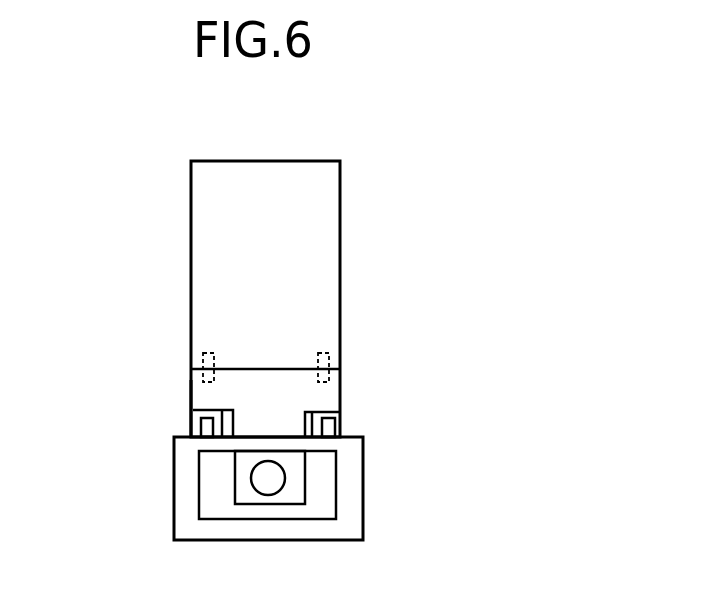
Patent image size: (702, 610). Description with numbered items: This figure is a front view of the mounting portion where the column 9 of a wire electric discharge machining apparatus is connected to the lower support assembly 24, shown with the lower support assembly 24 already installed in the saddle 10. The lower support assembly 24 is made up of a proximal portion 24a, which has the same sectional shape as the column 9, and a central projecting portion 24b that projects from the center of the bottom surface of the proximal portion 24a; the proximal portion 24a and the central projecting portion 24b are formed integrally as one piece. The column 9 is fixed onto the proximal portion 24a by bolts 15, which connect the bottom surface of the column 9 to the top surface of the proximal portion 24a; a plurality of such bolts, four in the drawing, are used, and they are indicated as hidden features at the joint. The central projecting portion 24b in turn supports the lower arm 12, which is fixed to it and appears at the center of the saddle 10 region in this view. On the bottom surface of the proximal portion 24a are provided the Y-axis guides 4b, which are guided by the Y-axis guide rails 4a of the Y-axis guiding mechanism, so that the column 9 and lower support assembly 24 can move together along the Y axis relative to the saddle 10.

The column 9 is at (340, 199).
The lower support assembly 24 is at (176, 378).
The proximal portion 24a is at (203, 398).
The central projecting portion 24b is at (235, 478).
The bolt 15 is at (203, 351).
The Y-axis guide rail 4a is at (208, 434).
The Y-axis guide 4b is at (197, 427).
The saddle 10 is at (363, 513).
The lower arm 12 is at (285, 476).